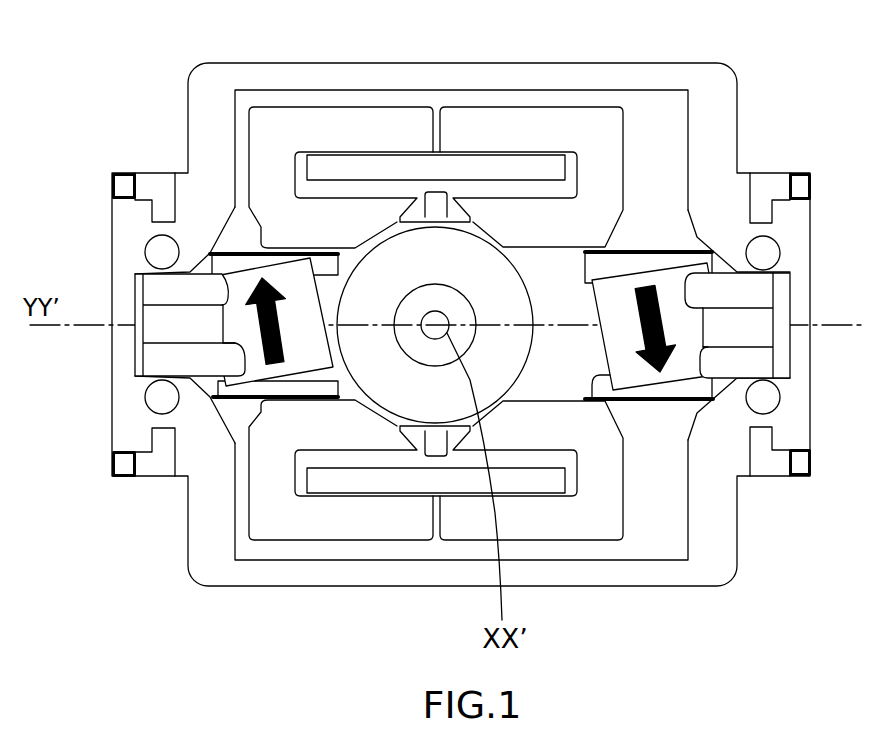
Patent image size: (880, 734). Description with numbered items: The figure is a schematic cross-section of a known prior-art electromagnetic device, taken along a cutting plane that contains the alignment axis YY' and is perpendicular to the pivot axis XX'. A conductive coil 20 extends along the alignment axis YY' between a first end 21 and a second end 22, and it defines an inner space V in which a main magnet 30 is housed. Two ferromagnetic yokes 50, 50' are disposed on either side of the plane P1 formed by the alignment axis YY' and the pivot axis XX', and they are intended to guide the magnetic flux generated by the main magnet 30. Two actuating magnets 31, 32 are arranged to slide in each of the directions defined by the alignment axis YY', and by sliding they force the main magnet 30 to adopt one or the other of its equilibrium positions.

The conductive coil 20 is at (347, 167).
The first end 21 is at (303, 157).
The second end 22 is at (570, 153).
The main magnet 30 is at (385, 380).
The actuating magnet 31 is at (257, 367).
The actuating magnet 32 is at (632, 370).
The ferromagnetic yoke 50 is at (436, 126).
The ferromagnetic yoke 50' is at (436, 527).